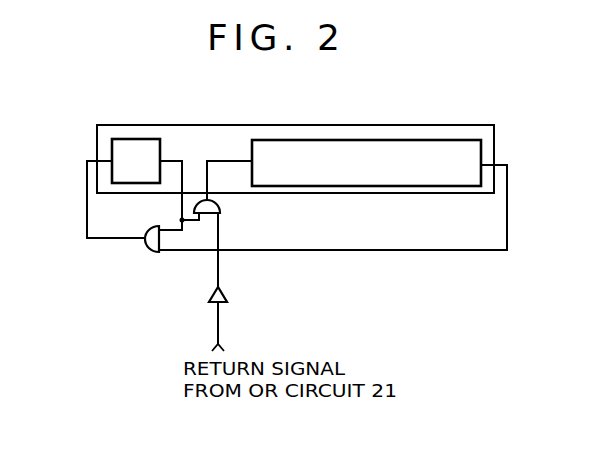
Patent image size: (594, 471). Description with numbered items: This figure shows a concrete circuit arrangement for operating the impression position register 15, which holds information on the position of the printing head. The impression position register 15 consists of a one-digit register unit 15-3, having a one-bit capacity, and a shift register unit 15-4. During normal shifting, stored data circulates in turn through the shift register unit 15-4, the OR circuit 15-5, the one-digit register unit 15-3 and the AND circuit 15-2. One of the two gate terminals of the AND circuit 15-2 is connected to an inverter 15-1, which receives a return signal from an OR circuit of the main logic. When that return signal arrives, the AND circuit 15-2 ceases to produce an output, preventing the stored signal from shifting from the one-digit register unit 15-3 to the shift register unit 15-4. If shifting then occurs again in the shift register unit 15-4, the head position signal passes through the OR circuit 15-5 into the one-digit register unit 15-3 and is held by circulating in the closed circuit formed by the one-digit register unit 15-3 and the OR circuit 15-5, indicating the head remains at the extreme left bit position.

The impression position register 15 is at (345, 125).
The inverter 15-1 is at (222, 289).
The AND circuit 15-2 is at (221, 212).
The one-digit register unit 15-3 is at (137, 139).
The shift register unit 15-4 is at (340, 186).
The OR circuit 15-5 is at (151, 250).